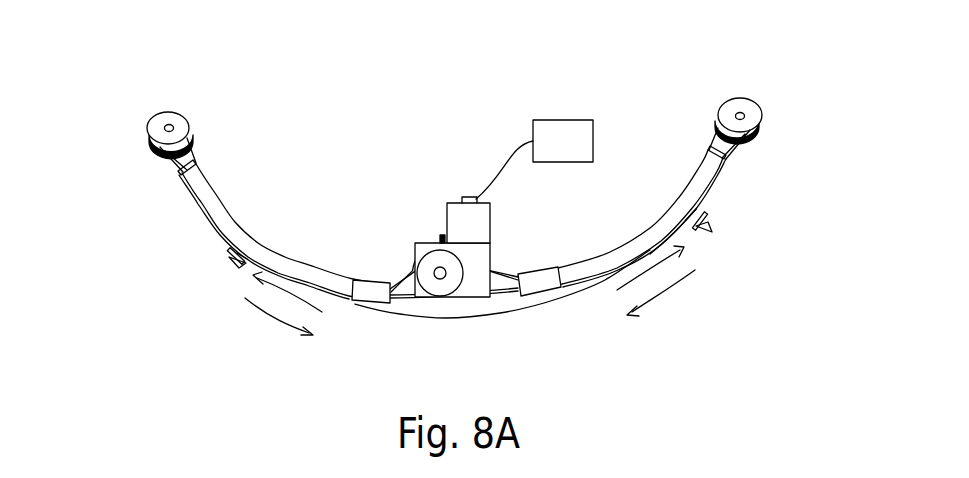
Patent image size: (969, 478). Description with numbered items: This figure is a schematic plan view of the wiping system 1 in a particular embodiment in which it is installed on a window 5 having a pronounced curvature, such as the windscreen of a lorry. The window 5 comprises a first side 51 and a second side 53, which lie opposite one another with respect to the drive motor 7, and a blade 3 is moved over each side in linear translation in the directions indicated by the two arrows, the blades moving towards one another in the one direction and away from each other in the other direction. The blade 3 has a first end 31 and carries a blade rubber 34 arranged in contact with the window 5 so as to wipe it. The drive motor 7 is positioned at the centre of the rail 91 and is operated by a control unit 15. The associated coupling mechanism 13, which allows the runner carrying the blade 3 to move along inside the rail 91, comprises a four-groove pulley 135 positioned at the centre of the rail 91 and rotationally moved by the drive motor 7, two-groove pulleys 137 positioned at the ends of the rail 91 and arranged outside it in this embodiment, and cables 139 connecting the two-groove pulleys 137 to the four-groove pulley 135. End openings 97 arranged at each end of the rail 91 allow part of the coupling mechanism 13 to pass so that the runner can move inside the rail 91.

The wiping system 1 is at (678, 72).
The blade 3 is at (230, 260).
The window 5 is at (470, 278).
The drive motor 7 is at (480, 218).
The associated coupling mechanism 13 is at (441, 235).
The control unit 15 is at (534, 159).
The first end of the blade 31 is at (246, 268).
The blade rubber 34 is at (228, 249).
The first side of the window 51 is at (686, 228).
The second side of the window 53 is at (360, 313).
The first rail 91 is at (236, 223).
The end openings 97 is at (198, 161).
The four-groove pulley 135 is at (432, 265).
The two-groove pulley 137 is at (157, 130).
The cable 139 is at (192, 145).